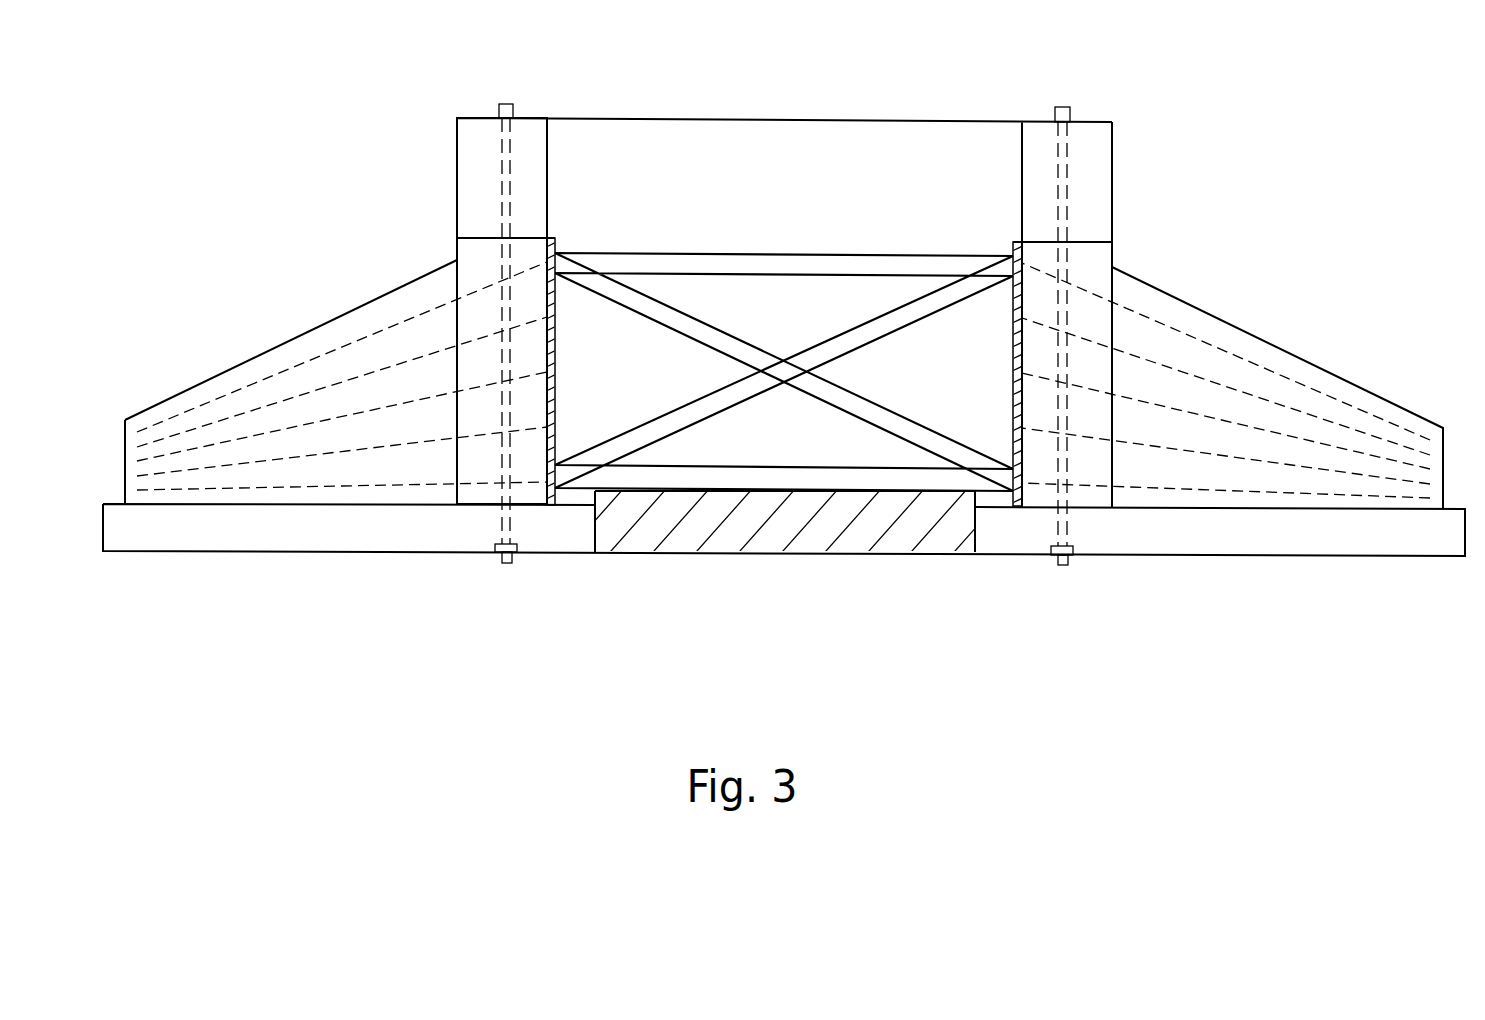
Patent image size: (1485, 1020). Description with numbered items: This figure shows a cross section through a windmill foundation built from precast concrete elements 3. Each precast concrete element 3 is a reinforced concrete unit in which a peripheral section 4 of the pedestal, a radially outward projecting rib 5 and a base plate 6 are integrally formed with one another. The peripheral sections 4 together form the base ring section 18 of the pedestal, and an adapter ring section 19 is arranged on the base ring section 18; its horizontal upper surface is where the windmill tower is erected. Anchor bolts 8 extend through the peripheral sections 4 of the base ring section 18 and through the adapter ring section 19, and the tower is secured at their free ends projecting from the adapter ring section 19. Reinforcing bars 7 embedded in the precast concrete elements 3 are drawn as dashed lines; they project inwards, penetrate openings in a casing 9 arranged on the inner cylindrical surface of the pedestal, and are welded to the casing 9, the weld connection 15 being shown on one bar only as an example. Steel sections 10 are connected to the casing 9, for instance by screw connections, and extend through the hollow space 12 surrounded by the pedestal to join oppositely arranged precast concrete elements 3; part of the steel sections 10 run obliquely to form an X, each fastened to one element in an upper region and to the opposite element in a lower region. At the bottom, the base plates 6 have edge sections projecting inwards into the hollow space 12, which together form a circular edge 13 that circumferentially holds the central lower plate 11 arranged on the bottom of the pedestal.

The precast concrete element 3 is at (213, 345).
The peripheral section 4 is at (477, 262).
The rib 5 is at (335, 335).
The base plate 6 is at (290, 530).
The reinforcing bars 7 is at (1278, 433).
The anchor bolts 8 is at (508, 105).
The casing 9 is at (1013, 320).
The steel sections 10 is at (838, 345).
The central lower plate 11 is at (707, 520).
The hollow space 12 is at (805, 437).
The circular edge 13 is at (572, 528).
The weld connection 15 is at (556, 368).
The base ring section 18 is at (487, 460).
The adapter ring section 19 is at (470, 155).